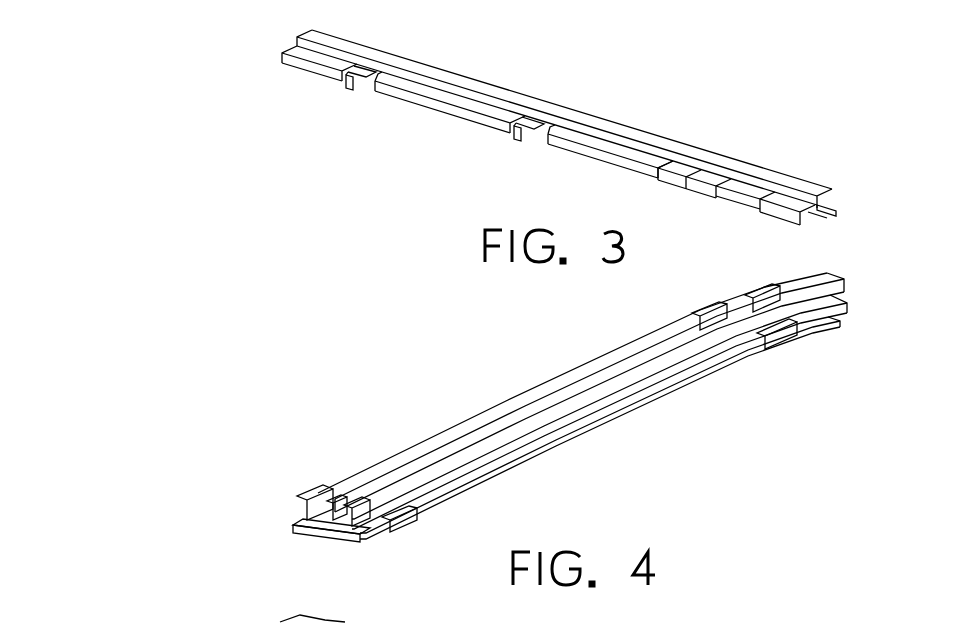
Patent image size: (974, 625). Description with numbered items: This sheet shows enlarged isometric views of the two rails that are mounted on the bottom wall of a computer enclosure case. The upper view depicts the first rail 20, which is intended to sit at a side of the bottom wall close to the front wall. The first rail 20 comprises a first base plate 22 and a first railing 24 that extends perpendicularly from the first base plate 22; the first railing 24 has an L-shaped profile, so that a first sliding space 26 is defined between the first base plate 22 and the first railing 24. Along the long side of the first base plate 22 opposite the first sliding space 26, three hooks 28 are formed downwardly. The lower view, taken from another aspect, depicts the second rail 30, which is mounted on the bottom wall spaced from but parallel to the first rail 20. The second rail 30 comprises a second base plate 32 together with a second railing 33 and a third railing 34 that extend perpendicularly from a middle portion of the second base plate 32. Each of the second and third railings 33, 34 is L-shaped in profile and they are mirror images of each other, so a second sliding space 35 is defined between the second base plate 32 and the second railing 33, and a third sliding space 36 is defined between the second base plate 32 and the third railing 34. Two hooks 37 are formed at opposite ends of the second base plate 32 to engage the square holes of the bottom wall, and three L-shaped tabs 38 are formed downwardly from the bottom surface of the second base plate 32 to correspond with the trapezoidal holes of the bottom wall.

In FIG. 3, the first rail 20 is at (504, 81).
In FIG. 3, the first base plate 22 is at (837, 211).
In FIG. 3, the first railing 24 is at (740, 182).
In FIG. 3, the first sliding space 26 is at (822, 198).
In FIG. 3, the hooks 28 is at (521, 142).
In FIG. 4, the second rail 30 is at (527, 382).
In FIG. 4, the second base plate 32 is at (344, 510).
In FIG. 4, the second railing 33 is at (457, 435).
In FIG. 4, the third railing 34 is at (545, 415).
In FIG. 4, the second sliding space 35 is at (326, 509).
In FIG. 4, the third sliding space 36 is at (367, 530).
In FIG. 4, the hooks 37 is at (300, 533).
In FIG. 4, the L-shaped tabs 38 is at (785, 343).